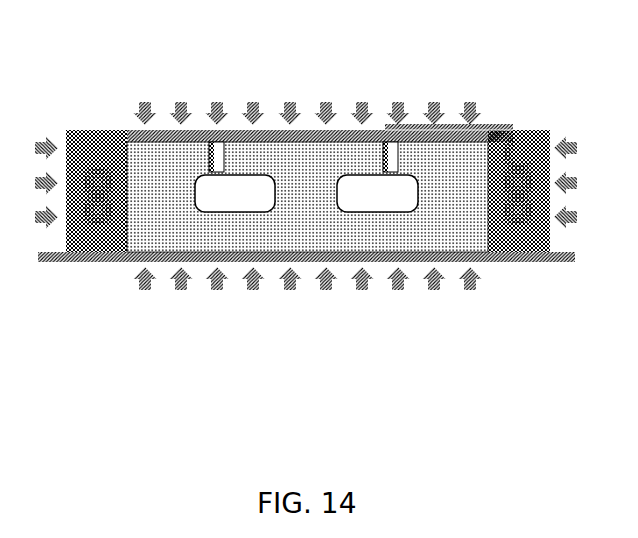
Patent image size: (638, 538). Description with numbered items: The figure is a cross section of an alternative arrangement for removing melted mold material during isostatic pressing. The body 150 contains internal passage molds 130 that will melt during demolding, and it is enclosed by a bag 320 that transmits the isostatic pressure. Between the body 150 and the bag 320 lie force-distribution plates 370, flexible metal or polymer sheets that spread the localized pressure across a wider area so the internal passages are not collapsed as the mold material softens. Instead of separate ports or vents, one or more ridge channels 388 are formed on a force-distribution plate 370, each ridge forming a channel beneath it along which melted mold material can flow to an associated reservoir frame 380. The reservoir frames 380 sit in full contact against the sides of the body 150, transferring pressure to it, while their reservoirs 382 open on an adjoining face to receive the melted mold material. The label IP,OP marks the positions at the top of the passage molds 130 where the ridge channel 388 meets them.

The internal passage mold 130 is at (372, 162).
The body 150 is at (442, 245).
The bag 320 is at (115, 127).
The force-distribution plate 370 is at (152, 147).
The reservoir frame 380 is at (528, 129).
The reservoir 382 is at (98, 177).
The ridge channel 388 is at (228, 128).
The input/output port IP,OP is at (208, 151).